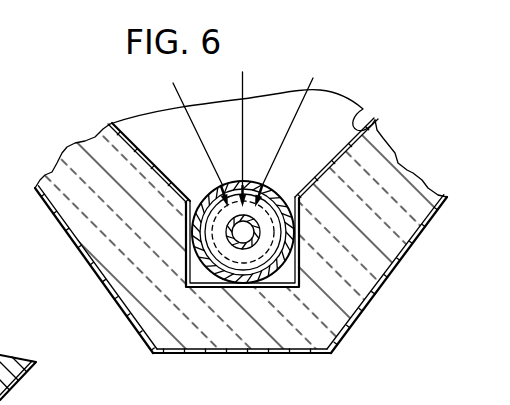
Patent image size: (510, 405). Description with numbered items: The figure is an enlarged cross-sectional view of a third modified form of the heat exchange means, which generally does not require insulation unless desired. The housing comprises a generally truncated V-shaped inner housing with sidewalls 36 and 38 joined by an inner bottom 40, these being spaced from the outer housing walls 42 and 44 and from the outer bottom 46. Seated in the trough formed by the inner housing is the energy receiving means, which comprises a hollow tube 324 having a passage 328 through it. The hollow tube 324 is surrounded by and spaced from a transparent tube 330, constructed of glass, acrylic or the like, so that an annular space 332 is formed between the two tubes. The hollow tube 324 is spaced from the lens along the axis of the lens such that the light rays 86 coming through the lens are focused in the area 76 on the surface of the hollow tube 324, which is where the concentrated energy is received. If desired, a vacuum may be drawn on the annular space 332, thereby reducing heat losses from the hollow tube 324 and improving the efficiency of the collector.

The sidewall 36 is at (365, 108).
The sidewall 38 is at (126, 133).
The inner bottom 40 is at (196, 281).
The outer housing wall 42 is at (390, 279).
The outer housing wall 44 is at (68, 239).
The bottom 46 is at (318, 356).
The area 76 is at (256, 194).
The light rays 86 is at (311, 87).
The hollow tube 324 is at (233, 247).
The passage 328 is at (244, 232).
The transparent tube 330 is at (273, 266).
The annular space 332 is at (247, 263).